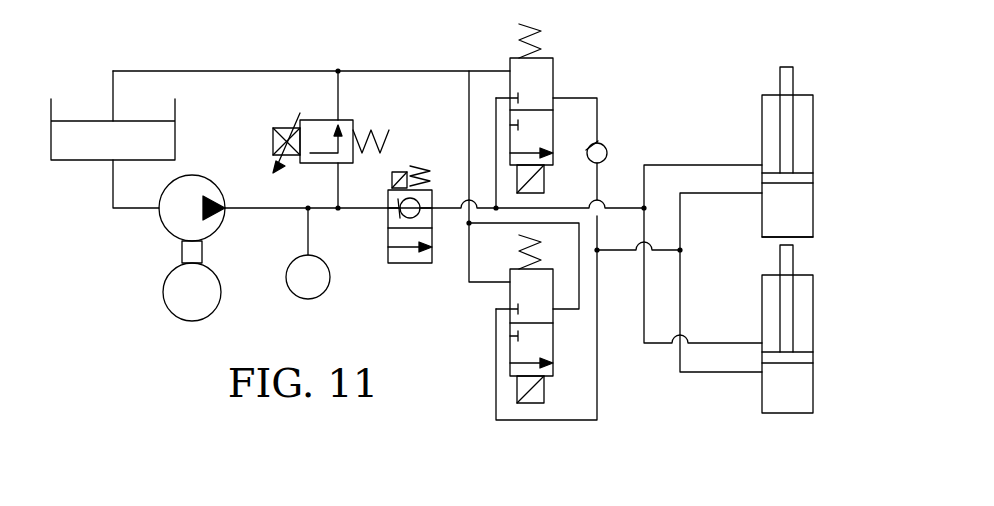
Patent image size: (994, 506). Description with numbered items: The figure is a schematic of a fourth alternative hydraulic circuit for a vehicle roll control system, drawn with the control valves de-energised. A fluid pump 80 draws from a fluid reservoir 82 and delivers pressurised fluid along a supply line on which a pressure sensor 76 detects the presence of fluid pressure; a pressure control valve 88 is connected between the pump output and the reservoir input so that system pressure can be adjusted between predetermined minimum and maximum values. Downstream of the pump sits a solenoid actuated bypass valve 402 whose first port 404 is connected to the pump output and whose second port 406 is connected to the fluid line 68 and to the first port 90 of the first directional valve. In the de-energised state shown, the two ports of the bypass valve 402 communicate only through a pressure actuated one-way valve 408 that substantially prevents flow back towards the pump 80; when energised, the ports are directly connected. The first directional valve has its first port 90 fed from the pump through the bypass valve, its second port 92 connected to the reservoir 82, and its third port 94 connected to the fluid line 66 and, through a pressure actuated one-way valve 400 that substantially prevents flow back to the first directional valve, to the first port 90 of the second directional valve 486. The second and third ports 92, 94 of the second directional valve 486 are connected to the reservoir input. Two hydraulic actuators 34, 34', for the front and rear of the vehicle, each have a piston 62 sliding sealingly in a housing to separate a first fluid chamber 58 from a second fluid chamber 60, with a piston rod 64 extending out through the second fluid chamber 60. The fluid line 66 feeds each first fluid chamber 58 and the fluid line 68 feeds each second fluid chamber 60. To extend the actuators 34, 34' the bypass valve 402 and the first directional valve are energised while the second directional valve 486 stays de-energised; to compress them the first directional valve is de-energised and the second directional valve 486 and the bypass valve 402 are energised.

The fluid reservoir 82 is at (77, 152).
The fluid pump 80 is at (158, 219).
The pressure sensor 76 is at (296, 296).
The pressure control valve 88 is at (345, 120).
The bypass valve 402 is at (377, 231).
The first port 404 is at (388, 212).
The second port 406 is at (432, 208).
The pressure actuated one-way valve 408 is at (398, 205).
The second port 92 is at (553, 98).
The first port 90 is at (512, 97).
The third port 94 is at (553, 98).
The pressure actuated one-way valve 400 is at (605, 146).
The second directional valve 486 is at (586, 0).
The fluid line 68 is at (736, 165).
The fluid line 66 is at (735, 424).
The hydraulic actuator 34 is at (819, 118).
The hydraulic actuator 34' is at (827, 352).
The second fluid chamber 60 is at (808, 125).
The piston 62 is at (810, 178).
The piston rod 64 is at (783, 80).
The first fluid chamber 58 is at (808, 222).